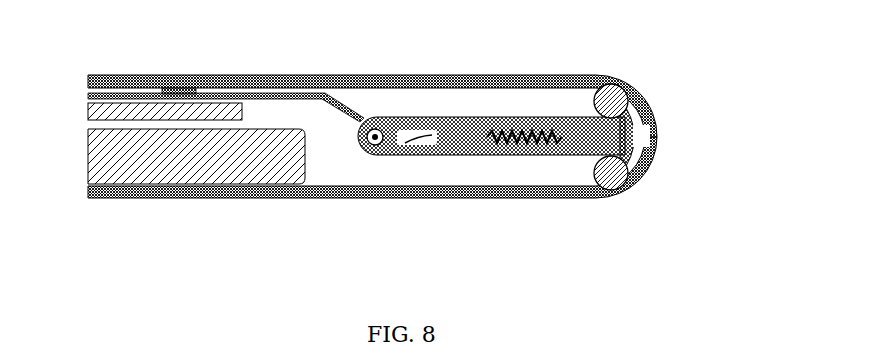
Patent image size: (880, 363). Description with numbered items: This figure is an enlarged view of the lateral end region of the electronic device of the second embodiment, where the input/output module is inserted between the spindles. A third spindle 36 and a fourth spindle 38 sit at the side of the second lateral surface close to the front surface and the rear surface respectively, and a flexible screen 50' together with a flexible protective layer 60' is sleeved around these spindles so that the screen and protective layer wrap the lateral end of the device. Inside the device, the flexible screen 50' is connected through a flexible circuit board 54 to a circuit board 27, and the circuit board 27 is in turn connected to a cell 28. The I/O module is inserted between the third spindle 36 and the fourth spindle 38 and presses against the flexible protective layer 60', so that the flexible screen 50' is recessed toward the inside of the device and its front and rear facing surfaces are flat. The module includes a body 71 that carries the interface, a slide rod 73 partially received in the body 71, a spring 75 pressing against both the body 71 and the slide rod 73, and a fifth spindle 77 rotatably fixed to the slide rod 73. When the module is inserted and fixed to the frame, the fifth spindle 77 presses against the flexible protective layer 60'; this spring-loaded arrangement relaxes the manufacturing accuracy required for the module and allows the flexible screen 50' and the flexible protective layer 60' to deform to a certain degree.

The circuit board 27 is at (122, 108).
The cell 28 is at (198, 163).
The flexible circuit board 54 is at (232, 76).
The fifth spindle 77 is at (374, 118).
The flexible protective layer 60' is at (372, 79).
The flexible screen 50' is at (372, 209).
The third spindle 36 is at (622, 80).
The fourth spindle 38 is at (637, 181).
The body 71 is at (656, 118).
The slide rod 73 is at (415, 143).
The spring 75 is at (487, 147).